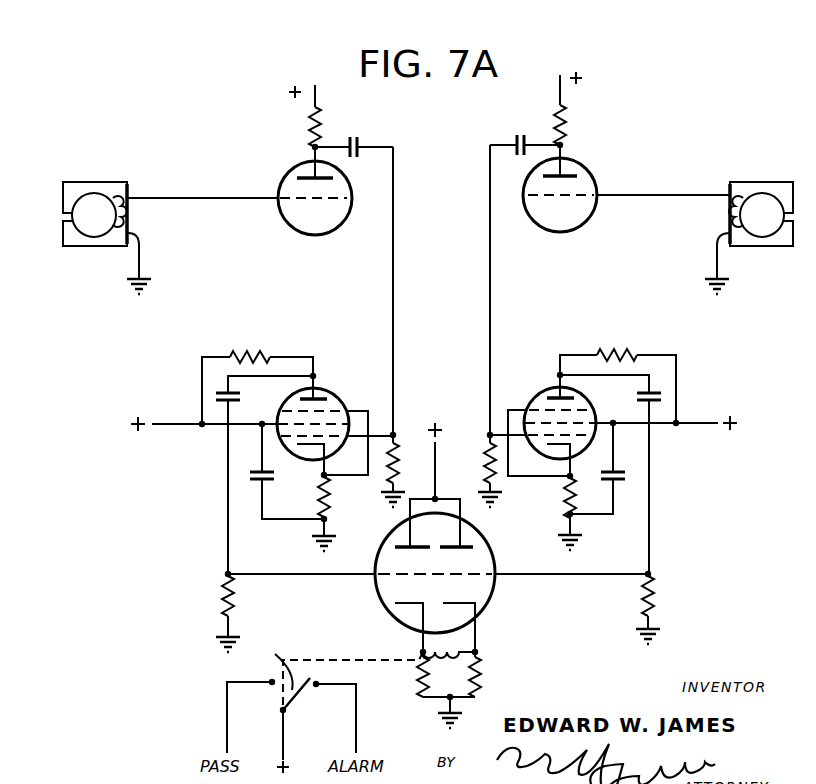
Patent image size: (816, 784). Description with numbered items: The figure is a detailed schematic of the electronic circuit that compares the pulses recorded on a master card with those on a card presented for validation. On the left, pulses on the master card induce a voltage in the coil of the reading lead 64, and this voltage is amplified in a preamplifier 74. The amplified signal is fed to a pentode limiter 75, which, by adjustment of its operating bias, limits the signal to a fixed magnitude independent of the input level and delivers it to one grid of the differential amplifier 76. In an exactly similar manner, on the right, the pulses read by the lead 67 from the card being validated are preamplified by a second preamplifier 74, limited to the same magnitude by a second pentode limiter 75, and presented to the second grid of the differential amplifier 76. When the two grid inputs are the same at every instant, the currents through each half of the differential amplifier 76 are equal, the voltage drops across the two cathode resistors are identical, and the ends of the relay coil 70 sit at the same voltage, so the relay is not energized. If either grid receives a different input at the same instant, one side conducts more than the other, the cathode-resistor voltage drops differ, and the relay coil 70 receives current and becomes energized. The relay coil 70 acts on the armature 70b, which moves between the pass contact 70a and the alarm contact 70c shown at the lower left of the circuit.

The reading lead 64 is at (95, 182).
The lead 67 is at (738, 182).
The preamplifier 74 is at (291, 226).
The pentode limiter 75 is at (327, 390).
The differential amplifier 76 is at (493, 588).
The relay coil 70 is at (476, 648).
The pass contact 70a is at (270, 684).
The relay armature 70b is at (273, 662).
The alarm contact 70c is at (316, 687).